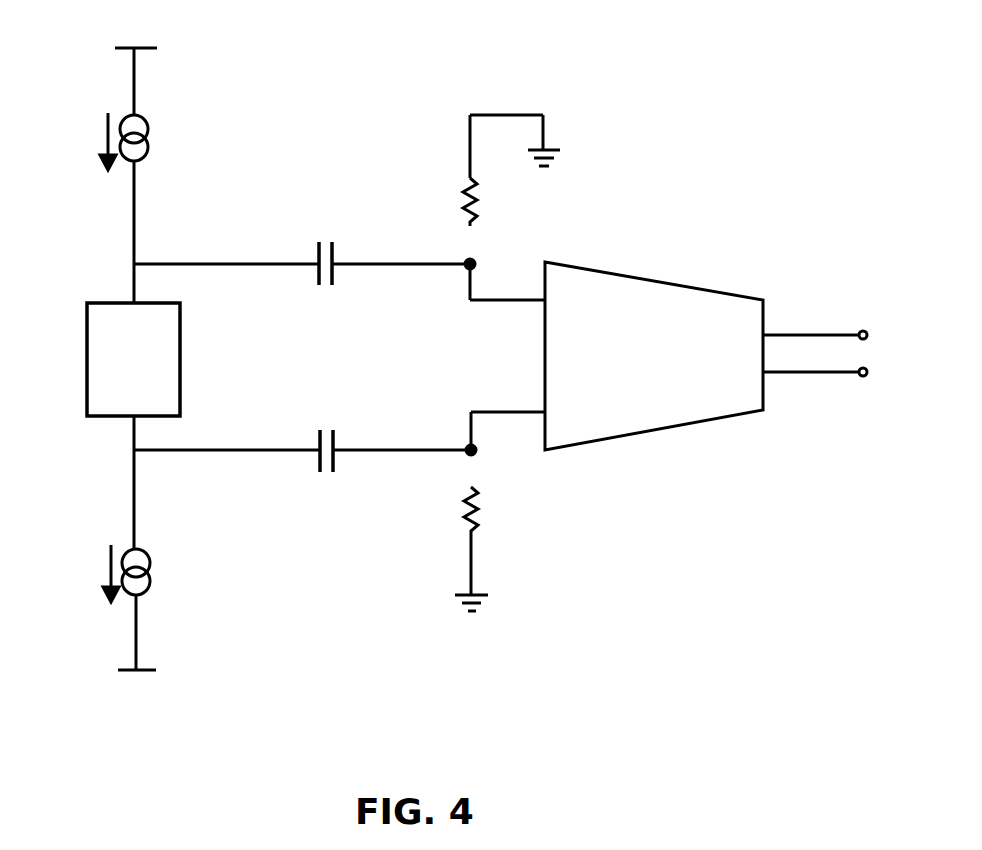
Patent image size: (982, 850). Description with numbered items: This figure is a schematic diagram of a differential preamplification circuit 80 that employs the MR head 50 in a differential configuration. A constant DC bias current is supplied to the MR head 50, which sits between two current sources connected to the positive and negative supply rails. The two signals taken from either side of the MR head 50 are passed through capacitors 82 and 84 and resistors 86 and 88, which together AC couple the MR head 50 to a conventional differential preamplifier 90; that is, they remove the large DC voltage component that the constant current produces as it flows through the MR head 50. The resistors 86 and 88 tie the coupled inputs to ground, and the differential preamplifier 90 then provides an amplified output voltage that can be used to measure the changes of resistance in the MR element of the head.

The differential preamplification circuit 80 is at (362, 100).
The MR head 50 is at (170, 383).
The capacitor 82 is at (326, 236).
The capacitor 84 is at (326, 476).
The resistor 86 is at (466, 196).
The resistor 88 is at (478, 507).
The differential preamplifier 90 is at (667, 418).